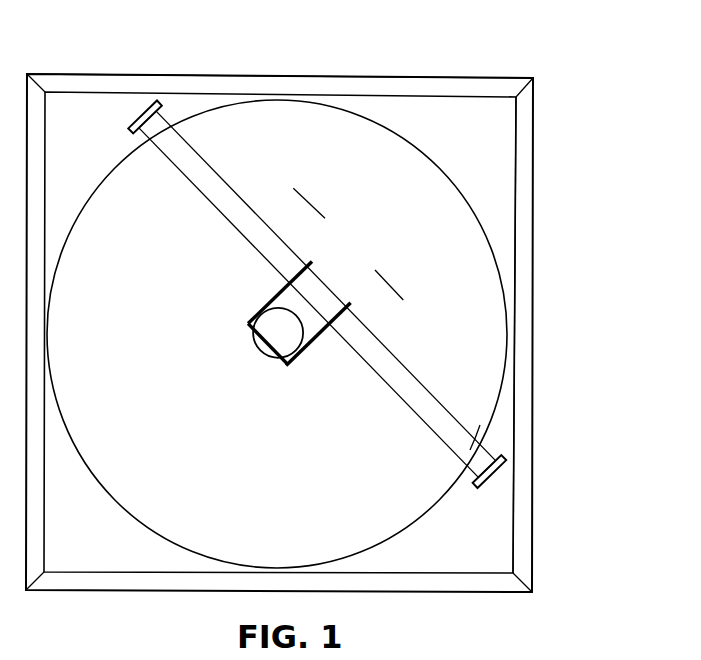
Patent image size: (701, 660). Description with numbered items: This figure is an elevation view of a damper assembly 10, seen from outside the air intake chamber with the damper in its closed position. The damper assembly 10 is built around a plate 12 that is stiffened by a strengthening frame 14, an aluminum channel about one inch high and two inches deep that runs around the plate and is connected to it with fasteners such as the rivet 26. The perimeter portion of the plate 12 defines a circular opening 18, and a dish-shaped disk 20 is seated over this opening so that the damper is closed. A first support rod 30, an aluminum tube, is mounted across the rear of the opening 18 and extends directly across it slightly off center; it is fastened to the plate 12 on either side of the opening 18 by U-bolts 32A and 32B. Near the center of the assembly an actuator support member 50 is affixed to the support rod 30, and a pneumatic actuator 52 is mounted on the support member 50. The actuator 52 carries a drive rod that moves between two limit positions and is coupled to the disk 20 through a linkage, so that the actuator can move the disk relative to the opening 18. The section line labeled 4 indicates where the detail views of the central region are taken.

The damper assembly 10 is at (545, 248).
The plate 12 is at (487, 128).
The strengthening frame 14 is at (393, 87).
The circular opening 18 is at (472, 206).
The dish-shaped disk 20 is at (482, 424).
The rivet 26 is at (522, 345).
The first support rod 30 is at (427, 402).
The U-bolt 32A is at (132, 131).
The U-bolt 32B is at (478, 490).
The actuator support member 50 is at (278, 284).
The pneumatic actuator 52 is at (280, 345).
The section line 4- 4 is at (273, 223).